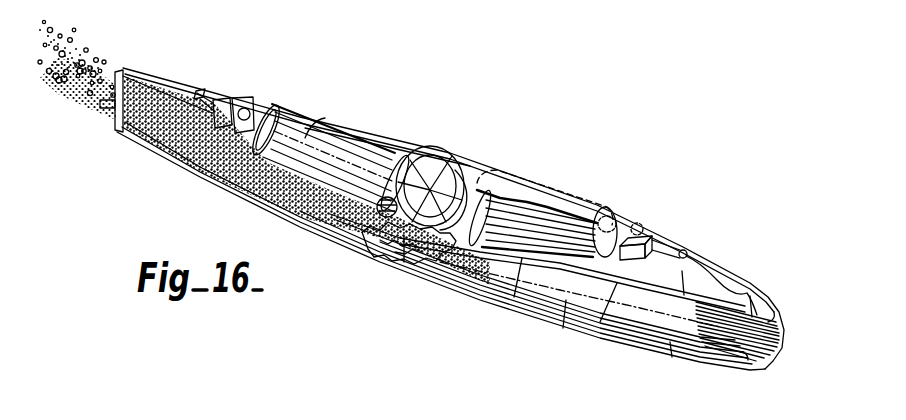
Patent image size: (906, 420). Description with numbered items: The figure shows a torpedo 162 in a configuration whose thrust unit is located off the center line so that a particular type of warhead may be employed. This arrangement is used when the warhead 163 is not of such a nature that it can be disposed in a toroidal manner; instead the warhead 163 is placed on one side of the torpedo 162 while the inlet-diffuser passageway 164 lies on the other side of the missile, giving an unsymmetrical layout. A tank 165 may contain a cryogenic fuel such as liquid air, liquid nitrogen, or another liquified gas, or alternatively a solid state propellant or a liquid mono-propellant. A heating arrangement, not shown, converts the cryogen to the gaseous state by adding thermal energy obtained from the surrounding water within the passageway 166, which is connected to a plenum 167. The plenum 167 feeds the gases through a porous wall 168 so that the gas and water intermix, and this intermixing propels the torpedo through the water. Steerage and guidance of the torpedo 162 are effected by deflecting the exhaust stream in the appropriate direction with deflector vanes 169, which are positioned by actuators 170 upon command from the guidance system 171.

The torpedo 162 is at (484, 312).
The warhead 163 is at (600, 204).
The inlet-diffuser passageway 164 is at (566, 302).
The tank 165 is at (238, 189).
The passageway 166 is at (468, 198).
The plenum 167 is at (478, 190).
The porous wall 168 is at (401, 272).
The deflector vanes 169 is at (113, 130).
The actuators 170 is at (248, 99).
The guidance system 171 is at (640, 240).